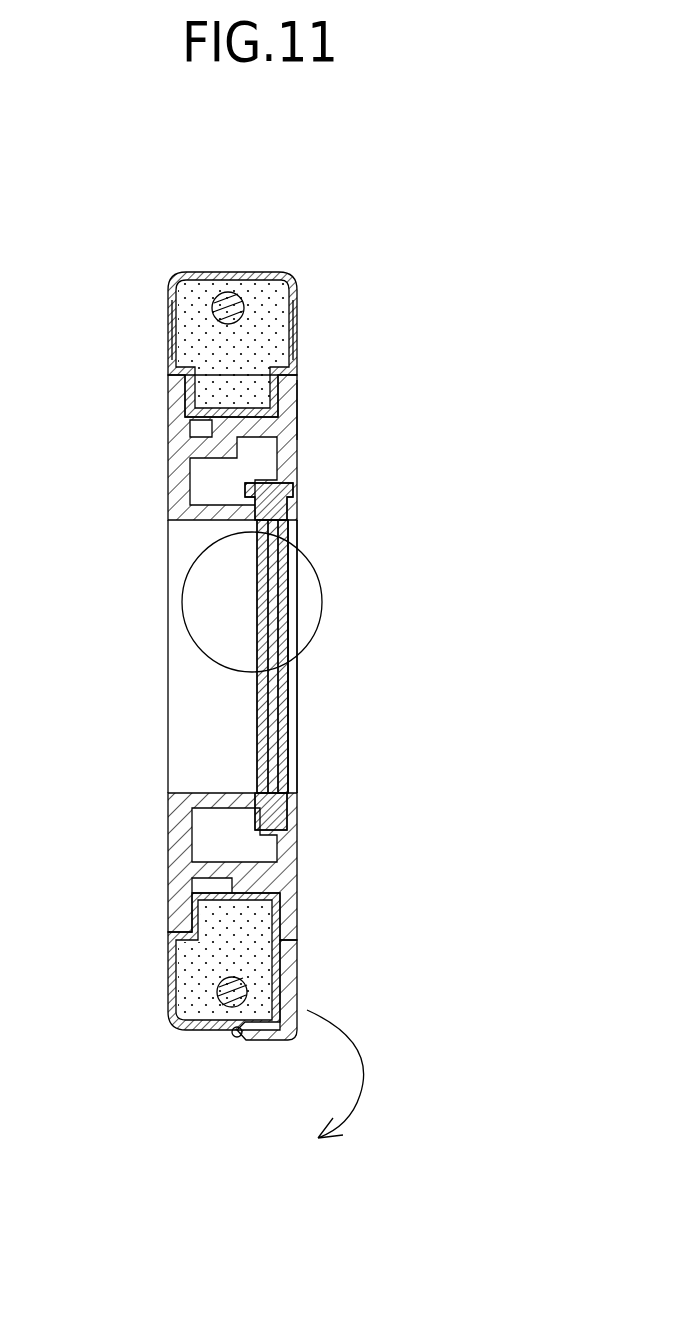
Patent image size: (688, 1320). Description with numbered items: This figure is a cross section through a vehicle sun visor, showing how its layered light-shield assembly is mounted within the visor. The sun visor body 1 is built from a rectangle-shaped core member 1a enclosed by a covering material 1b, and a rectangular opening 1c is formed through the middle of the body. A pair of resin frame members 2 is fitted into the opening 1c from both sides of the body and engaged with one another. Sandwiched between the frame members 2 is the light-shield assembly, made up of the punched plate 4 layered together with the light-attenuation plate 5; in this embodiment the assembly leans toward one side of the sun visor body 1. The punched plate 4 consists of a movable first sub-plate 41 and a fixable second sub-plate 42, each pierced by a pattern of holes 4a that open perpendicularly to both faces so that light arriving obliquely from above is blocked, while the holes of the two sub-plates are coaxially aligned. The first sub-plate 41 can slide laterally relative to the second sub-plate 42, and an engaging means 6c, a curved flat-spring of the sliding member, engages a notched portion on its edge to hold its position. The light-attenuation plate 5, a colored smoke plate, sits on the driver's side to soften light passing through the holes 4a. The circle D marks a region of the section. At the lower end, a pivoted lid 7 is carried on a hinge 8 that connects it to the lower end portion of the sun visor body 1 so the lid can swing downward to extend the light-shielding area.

The sun visor body 1 is at (440, 220).
The core member 1a is at (252, 294).
The covering material 1b is at (298, 318).
The rectangular opening 1c is at (297, 432).
The frame member 2 is at (168, 453).
The punched plate 4 is at (507, 613).
The movable punched sub-plate 41 is at (290, 673).
The hole 4a is at (345, 585).
The fixable punched sub-plate 42 is at (290, 768).
The light-attenuation plate 5 is at (290, 713).
The engaging means 6c is at (293, 525).
The display region D is at (182, 598).
The pivoted lid 7 is at (297, 975).
The hinge 8 is at (236, 1038).